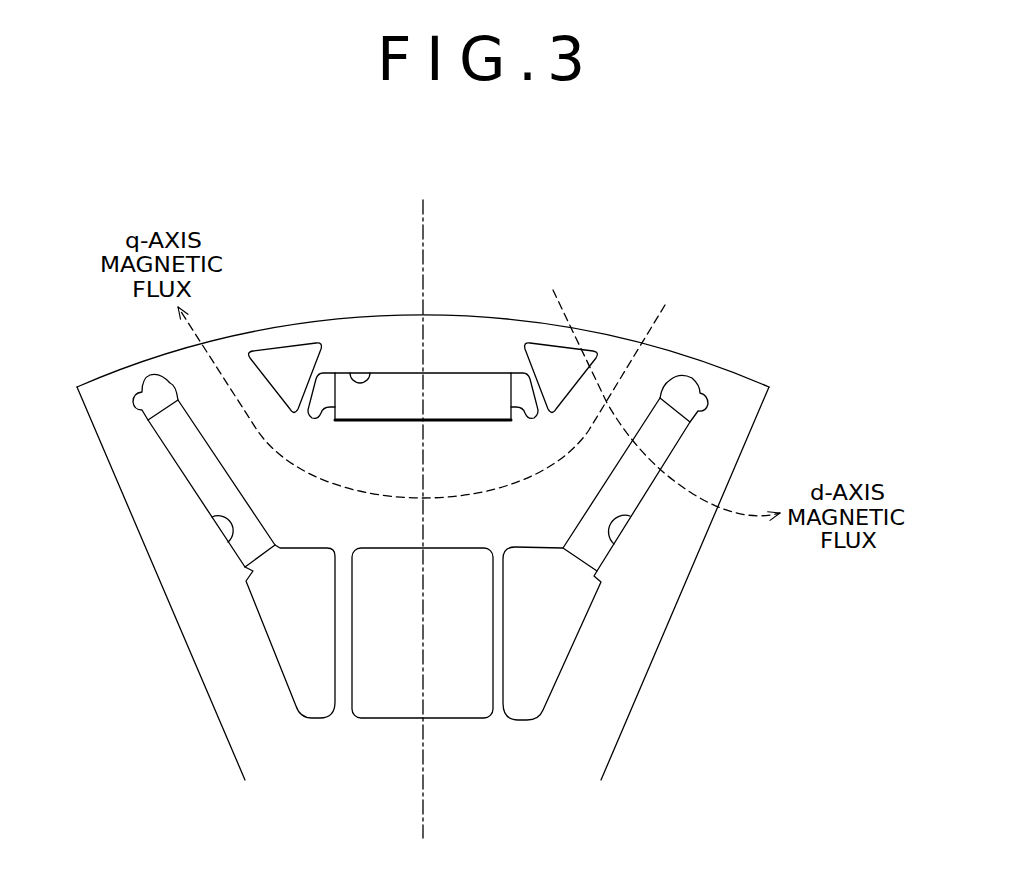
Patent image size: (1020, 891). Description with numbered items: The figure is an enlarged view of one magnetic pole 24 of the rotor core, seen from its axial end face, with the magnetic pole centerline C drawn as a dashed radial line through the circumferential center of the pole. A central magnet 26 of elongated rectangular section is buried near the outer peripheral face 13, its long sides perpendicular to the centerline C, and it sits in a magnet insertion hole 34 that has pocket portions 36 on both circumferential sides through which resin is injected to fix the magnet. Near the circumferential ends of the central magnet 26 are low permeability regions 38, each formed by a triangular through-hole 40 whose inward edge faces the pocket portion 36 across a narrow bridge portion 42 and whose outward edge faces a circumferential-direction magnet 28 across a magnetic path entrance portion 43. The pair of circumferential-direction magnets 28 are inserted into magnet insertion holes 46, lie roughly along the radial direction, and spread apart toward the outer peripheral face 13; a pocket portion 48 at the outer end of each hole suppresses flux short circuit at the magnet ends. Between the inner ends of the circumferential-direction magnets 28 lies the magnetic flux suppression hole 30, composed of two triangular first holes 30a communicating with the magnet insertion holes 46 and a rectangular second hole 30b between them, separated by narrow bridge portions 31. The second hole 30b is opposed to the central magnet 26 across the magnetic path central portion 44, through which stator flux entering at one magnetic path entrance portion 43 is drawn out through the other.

The outer peripheral face 13 is at (105, 376).
The magnetic pole centerline C is at (428, 226).
The magnetic pole 24 is at (456, 340).
The central magnet 26 is at (412, 368).
The circumferential-direction magnets 28 is at (180, 488).
The magnetic flux suppression hole 30 is at (553, 745).
The first holes 30a is at (326, 635).
The second hole 30b is at (412, 635).
The bridge portions 31 is at (352, 667).
The magnet insertion hole 34 is at (350, 372).
The pocket portions 36 is at (322, 417).
The low permeability regions 38 is at (264, 346).
The triangular through-holes 40 is at (300, 382).
The bridge portion 42 is at (319, 370).
The magnetic path entrance portions 43 is at (259, 465).
The magnetic path central portion 44 is at (465, 489).
The magnet insertion holes 46 is at (212, 517).
The pocket portion 48 is at (138, 412).